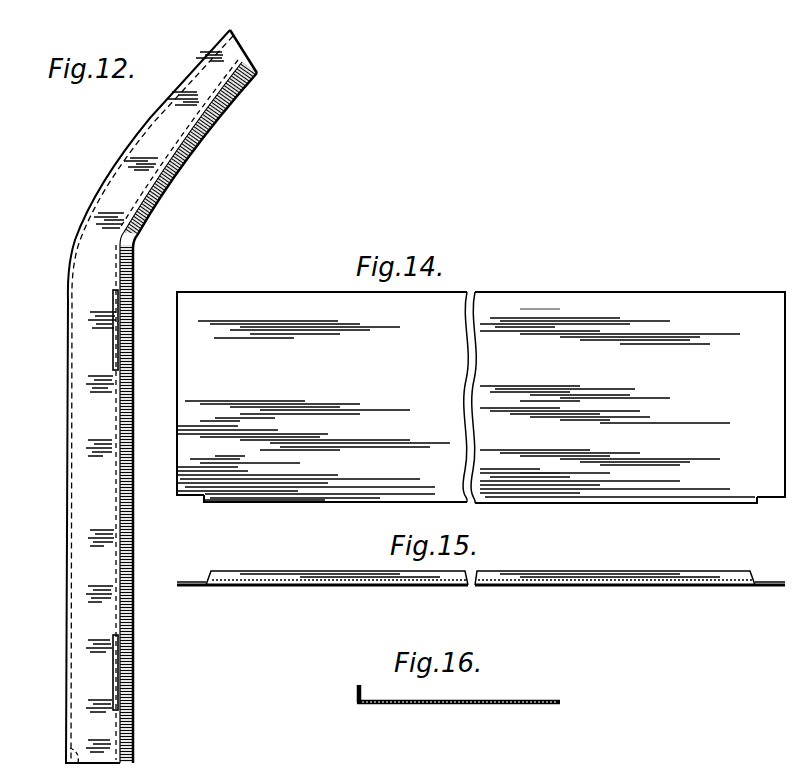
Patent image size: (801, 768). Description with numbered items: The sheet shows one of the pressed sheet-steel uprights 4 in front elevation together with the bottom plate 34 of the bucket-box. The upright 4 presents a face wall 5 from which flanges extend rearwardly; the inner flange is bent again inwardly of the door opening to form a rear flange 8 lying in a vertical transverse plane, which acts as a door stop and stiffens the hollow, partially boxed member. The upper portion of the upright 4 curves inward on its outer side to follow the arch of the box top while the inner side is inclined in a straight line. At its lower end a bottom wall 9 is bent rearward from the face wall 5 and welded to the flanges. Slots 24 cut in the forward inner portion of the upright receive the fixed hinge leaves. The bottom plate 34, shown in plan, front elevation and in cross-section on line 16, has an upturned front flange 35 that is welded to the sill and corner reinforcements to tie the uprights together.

In FIG. 12, the upright 4 is at (63, 444).
In FIG. 12, the face wall 5 is at (86, 508).
In FIG. 12, the rear flange 8 is at (134, 523).
In FIG. 12, the bottom wall 9 is at (70, 748).
In FIG. 12, the slots 24 is at (113, 318).
In FIG. 14, the section line 16— 16 is at (541, 309).
In FIG. 14, the bottom plate 34 is at (481, 397).
In FIG. 15, the bottom plate 34 is at (196, 587).
In FIG. 16, the bottom plate 34 is at (459, 705).
In FIG. 14, the upturned front flange 35 is at (667, 503).
In FIG. 15, the upturned front flange 35 is at (654, 572).
In FIG. 16, the upturned front flange 35 is at (357, 688).